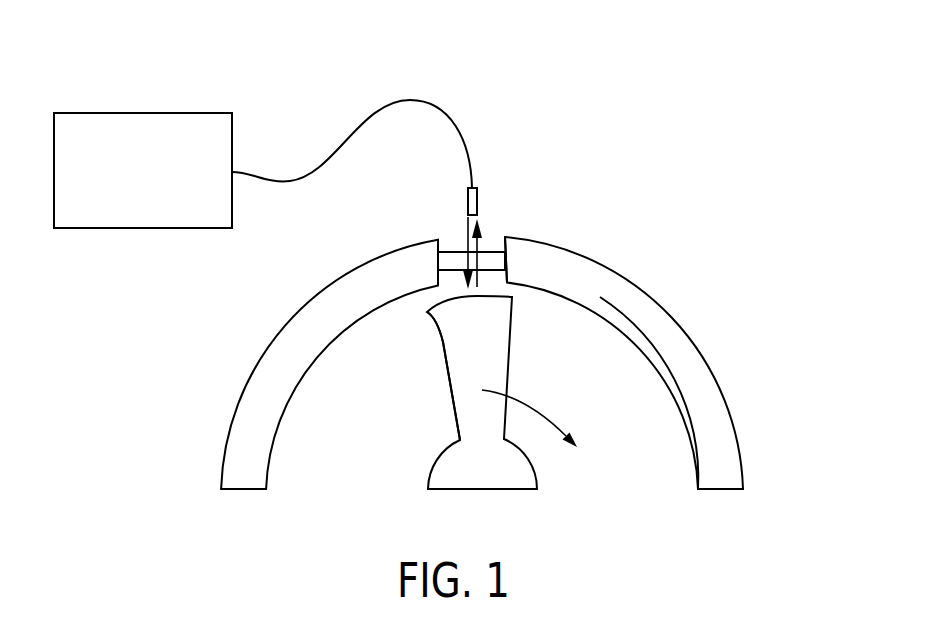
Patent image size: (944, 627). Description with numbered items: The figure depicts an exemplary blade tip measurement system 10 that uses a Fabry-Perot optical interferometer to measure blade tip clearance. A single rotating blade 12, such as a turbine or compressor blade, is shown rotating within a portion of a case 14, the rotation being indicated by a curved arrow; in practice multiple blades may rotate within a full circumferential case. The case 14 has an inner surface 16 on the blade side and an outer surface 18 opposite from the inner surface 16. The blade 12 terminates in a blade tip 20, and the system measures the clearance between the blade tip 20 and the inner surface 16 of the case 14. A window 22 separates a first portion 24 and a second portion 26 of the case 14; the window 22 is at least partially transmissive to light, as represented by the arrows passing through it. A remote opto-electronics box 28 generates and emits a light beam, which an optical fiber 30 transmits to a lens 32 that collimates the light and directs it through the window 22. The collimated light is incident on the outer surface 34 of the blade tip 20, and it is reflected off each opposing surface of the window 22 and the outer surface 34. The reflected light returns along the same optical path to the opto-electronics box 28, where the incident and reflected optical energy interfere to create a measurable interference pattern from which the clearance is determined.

The blade tip measurement system 10 is at (456, 78).
The rotating blade 12 is at (473, 424).
The case 14 is at (250, 435).
The inner surface 16 is at (688, 438).
The outer surface 18 is at (733, 425).
The blade tip 20 is at (443, 342).
The window 22 is at (453, 260).
The first portion 24 is at (374, 277).
The second portion 26 is at (567, 273).
The remote opto-electronics box 28 is at (151, 218).
The optical fiber 30 is at (344, 140).
The lens 32 is at (477, 203).
The outer surface of the blade tip 34 is at (488, 297).